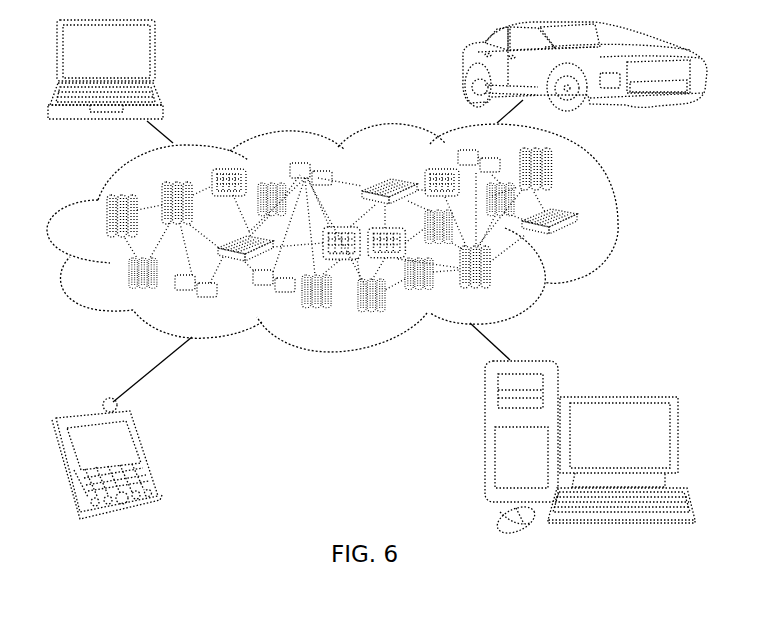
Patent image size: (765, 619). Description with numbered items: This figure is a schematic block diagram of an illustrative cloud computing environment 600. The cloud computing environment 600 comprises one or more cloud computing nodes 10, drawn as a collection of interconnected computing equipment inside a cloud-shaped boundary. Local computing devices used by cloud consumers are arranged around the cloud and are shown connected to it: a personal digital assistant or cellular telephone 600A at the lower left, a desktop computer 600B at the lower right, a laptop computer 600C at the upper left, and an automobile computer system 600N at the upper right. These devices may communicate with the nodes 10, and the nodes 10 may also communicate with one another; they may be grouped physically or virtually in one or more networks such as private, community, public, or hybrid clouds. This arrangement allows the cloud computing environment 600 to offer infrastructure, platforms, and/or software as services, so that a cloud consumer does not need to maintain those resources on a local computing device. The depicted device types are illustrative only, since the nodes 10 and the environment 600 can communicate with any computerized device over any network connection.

The cloud computing node 10 is at (580, 242).
The cloud computing environment 600 is at (617, 220).
The personal digital assistant or cellular telephone 600A is at (145, 455).
The desktop computer 600B is at (626, 382).
The laptop computer 600C is at (153, 55).
The automobile computer system 600N is at (462, 67).